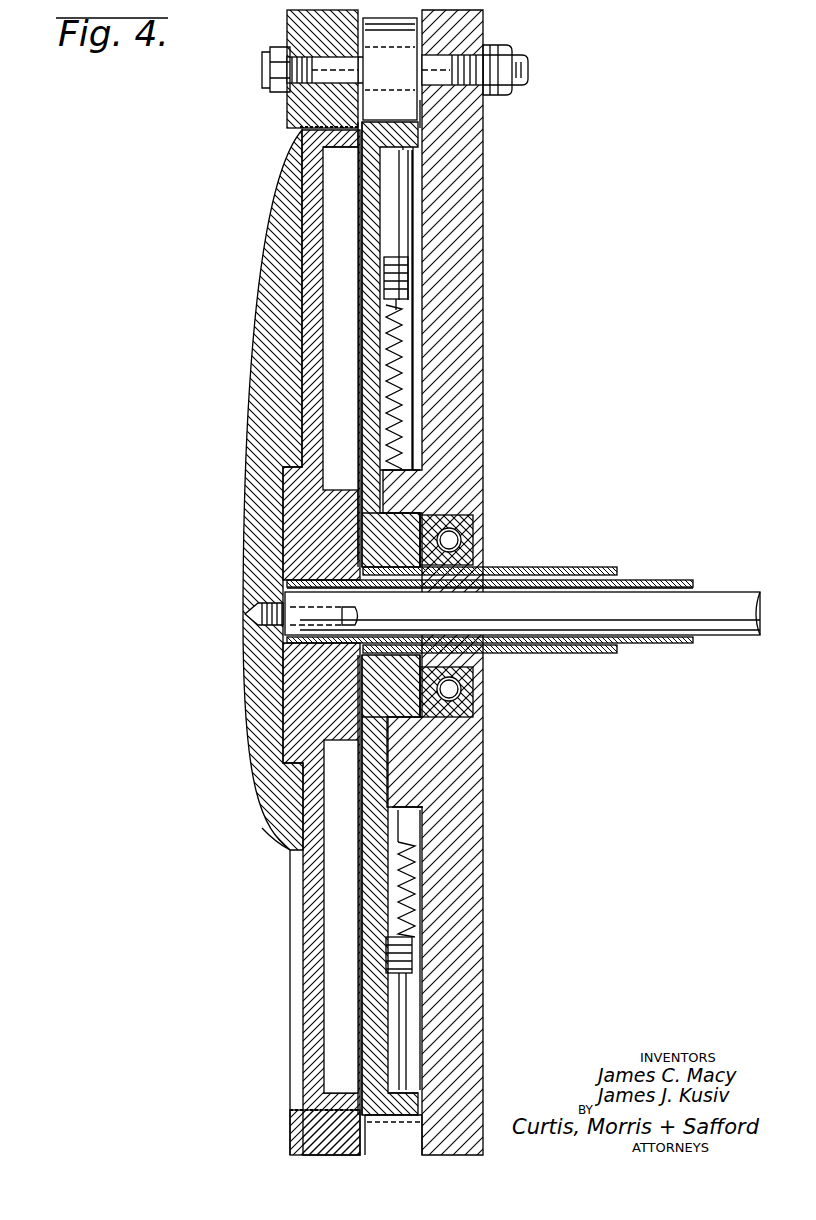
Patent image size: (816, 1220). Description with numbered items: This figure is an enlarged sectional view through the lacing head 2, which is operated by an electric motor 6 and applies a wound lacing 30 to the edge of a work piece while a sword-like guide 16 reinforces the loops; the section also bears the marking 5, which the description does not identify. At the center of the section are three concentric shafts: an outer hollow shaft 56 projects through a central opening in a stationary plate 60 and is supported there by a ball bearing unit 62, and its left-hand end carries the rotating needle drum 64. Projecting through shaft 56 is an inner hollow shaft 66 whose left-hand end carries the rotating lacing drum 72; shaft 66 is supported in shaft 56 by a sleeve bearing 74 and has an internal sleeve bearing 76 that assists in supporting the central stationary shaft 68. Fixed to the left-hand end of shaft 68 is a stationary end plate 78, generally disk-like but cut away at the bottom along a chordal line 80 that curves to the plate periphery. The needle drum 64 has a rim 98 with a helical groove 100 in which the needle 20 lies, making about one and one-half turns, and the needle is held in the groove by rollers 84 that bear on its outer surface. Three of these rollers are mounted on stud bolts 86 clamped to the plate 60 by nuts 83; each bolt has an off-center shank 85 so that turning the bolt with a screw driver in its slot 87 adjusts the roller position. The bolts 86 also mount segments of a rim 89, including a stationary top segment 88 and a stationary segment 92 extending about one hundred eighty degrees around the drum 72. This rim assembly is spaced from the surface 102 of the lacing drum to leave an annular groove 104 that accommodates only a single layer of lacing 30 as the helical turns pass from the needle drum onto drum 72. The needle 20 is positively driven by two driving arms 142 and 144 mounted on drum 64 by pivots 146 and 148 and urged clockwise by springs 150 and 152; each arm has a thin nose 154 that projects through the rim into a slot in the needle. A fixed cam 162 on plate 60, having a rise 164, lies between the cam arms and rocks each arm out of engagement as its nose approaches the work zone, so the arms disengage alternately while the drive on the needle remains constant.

The lacing head 2 is at (178, 238).
The dimension 5 is at (402, 114).
The electric motor 6 is at (381, 114).
The guide 16 is at (434, 193).
The needle 20 is at (378, 130).
The lacing 30 is at (325, 624).
The hollow shaft 56 is at (540, 568).
The stationary plate 60 is at (470, 322).
The ball bearing unit 62 is at (449, 527).
The rotating needle drum 64 is at (360, 370).
The hollow shaft 66 is at (650, 581).
The stationary shaft 68 is at (732, 600).
The rotating lacing drum 72 is at (300, 920).
The sleeve bearing 74 is at (398, 590).
The internal sleeve bearing 76 is at (317, 592).
The stationary end plate 78 is at (258, 352).
The chordal line 80 is at (290, 850).
The nut 83 is at (505, 100).
The roller 84 is at (398, 36).
The off-center shank 85 is at (362, 38).
The stud bolt 86 is at (441, 116).
The slot 87 is at (520, 72).
The stationary top segment 88 is at (287, 34).
The rim 89 is at (288, 1012).
The stationary segment 92 is at (290, 1126).
The rim 98 is at (408, 130).
The helical groove 100 is at (390, 135).
The surface 102 is at (333, 1105).
The annular groove 104 is at (300, 127).
The driving arm 142 is at (405, 223).
The driving arm 144 is at (400, 1005).
The pivot 146 is at (386, 282).
The pivot 148 is at (386, 962).
The spring 150 is at (410, 852).
The spring 152 is at (400, 380).
The nose 154 is at (412, 1105).
The fixed cam 162 is at (395, 485).
The rise 164 is at (402, 790).